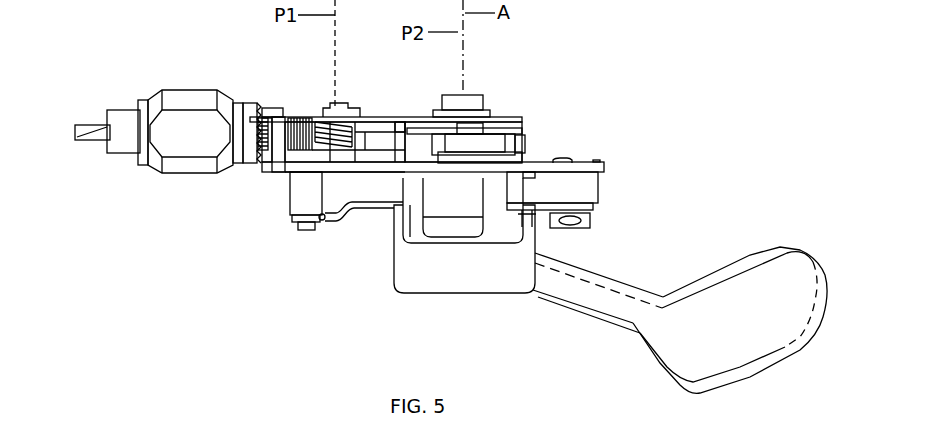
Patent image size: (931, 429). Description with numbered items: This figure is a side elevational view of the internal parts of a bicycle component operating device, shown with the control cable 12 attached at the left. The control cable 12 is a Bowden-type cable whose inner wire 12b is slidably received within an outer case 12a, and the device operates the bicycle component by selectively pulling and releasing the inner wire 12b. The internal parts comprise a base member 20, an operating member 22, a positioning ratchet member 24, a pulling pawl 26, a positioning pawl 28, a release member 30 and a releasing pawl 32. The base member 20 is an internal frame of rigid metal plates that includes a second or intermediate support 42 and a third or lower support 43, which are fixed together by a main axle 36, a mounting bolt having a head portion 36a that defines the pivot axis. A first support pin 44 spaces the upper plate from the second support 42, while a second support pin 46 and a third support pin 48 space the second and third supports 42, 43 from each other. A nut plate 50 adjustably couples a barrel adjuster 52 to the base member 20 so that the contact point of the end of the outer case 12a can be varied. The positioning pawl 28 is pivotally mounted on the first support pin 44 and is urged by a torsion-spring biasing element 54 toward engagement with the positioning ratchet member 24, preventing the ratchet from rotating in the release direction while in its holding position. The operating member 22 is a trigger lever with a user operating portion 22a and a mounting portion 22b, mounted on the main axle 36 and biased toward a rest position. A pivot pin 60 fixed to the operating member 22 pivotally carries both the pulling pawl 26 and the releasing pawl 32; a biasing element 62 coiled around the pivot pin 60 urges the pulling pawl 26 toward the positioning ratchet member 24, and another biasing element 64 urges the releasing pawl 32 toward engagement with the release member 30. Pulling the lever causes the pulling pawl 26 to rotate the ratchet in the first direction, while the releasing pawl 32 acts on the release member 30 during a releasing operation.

The control cable 12 is at (164, 53).
The outer case 12a is at (125, 110).
The inner wire 12b is at (90, 126).
The base member 20 is at (614, 163).
The operating member 22 is at (577, 316).
The user operating portion 22a is at (743, 338).
The mounting portion 22b is at (437, 293).
The positioning ratchet member 24 is at (398, 122).
The pulling pawl 26 is at (396, 172).
The positioning pawl 28 is at (305, 155).
The release member 30 is at (388, 170).
The releasing pawl 32 is at (530, 158).
The main axle 36 is at (477, 86).
The head portion 36a is at (485, 100).
The second support 42 is at (585, 162).
The third support 43 is at (337, 218).
The first support pin 44 is at (338, 105).
The second support pin 46 is at (303, 232).
The third support pin 48 is at (563, 158).
The nut plate 50 is at (262, 163).
The barrel adjuster 52 is at (185, 182).
The biasing element 54 is at (317, 130).
The pivot pin 60 is at (468, 130).
The biasing element 62 is at (470, 185).
The biasing element 64 is at (448, 177).